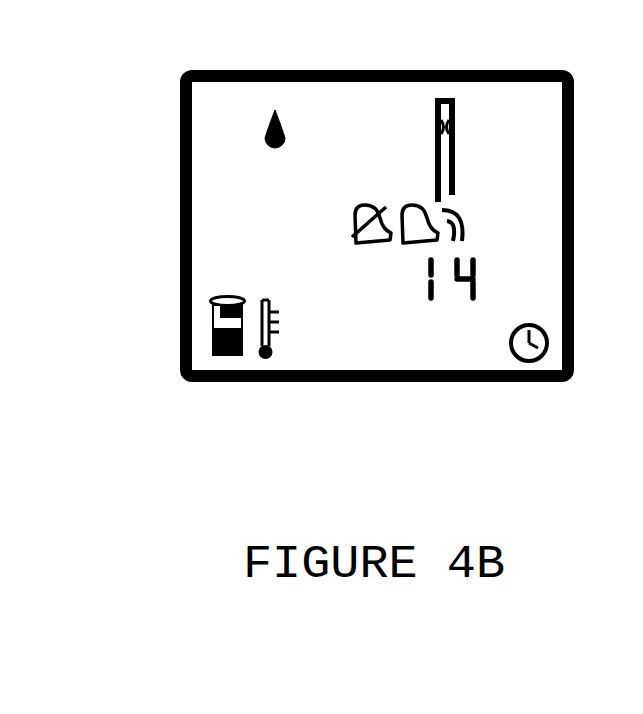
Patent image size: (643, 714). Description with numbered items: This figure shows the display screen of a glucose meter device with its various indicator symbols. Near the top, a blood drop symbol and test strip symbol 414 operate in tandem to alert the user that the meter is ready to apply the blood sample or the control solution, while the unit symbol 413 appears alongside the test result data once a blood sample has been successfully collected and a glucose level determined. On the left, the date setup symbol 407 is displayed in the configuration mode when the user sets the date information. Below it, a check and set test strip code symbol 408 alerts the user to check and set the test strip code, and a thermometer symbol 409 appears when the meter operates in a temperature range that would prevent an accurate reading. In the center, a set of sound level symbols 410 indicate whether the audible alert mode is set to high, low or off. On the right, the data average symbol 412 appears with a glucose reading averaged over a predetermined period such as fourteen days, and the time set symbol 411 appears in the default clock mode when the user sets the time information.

The date setup symbol 407 is at (235, 250).
The check and set test strip code symbol 408 is at (222, 358).
The thermometer symbol 409 is at (264, 358).
The sound level symbols 410 is at (368, 243).
The time set symbol 411 is at (485, 362).
The data average symbol 412 is at (540, 292).
The unit symbol 413 is at (466, 93).
The blood drop symbol and test strip symbol 414 is at (443, 98).